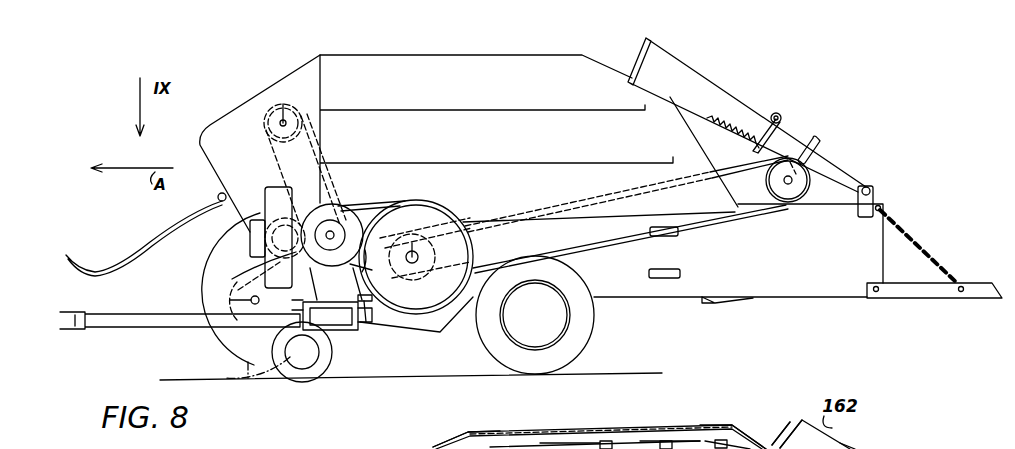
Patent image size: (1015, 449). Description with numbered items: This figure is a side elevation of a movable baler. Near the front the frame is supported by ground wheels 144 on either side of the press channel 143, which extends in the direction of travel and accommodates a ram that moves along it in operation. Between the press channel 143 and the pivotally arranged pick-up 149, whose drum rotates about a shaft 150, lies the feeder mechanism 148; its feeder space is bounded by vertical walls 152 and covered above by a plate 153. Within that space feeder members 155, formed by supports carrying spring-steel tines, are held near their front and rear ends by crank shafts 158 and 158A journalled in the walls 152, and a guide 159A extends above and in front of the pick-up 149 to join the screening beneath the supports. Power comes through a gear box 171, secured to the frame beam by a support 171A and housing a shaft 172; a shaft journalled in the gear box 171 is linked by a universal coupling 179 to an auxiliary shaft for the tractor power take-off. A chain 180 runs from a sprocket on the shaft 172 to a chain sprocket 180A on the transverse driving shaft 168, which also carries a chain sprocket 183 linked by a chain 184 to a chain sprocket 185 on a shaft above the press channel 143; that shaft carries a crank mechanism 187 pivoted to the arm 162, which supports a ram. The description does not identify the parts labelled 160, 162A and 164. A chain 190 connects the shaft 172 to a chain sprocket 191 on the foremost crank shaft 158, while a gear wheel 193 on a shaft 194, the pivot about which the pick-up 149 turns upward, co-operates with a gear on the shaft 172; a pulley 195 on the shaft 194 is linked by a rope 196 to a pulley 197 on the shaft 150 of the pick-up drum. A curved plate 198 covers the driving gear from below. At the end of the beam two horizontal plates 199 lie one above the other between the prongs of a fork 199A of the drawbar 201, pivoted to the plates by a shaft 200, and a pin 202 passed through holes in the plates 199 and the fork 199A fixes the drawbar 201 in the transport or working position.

The press channel 143 is at (808, 291).
The ground wheels 144 is at (586, 358).
The feeder mechanism 148 is at (490, 426).
The pick-up 149 is at (152, 291).
The shaft 150 is at (230, 303).
The vertical walls 152 is at (444, 62).
The plate 153 is at (710, 424).
The feeder members 155 is at (560, 434).
The crank shaft 158 is at (260, 143).
The crank shaft 158A is at (655, 438).
The guide 159A is at (144, 264).
The member 160 is at (778, 438).
The arm 162 is at (710, 80).
The chute pivot bracket 162A is at (877, 194).
The chute part 164 is at (870, 438).
The driving shaft 168 is at (418, 240).
The gear box 171 is at (345, 204).
The support 171A is at (376, 267).
The shaft 172 is at (408, 246).
The universal coupling 179 is at (336, 284).
The chain 180 is at (386, 208).
The chain sprocket 180A is at (440, 206).
The chain sprocket 183 is at (418, 280).
The chain 184 is at (628, 236).
The chain sprocket 185 is at (806, 198).
The crank mechanism 187 is at (822, 146).
The chain 190 is at (316, 138).
The chain sprocket 191 is at (268, 123).
The gear wheel 193 is at (266, 200).
The shaft 194 is at (260, 238).
The pulley 195 is at (268, 246).
The rope 196 is at (240, 274).
The pulley 197 is at (230, 292).
The curved plate 198 is at (440, 334).
The horizontal plates 199 is at (372, 318).
The fork 199A is at (348, 332).
The shaft 200 is at (302, 352).
The drawbar 201 is at (104, 327).
The pin 202 is at (372, 298).